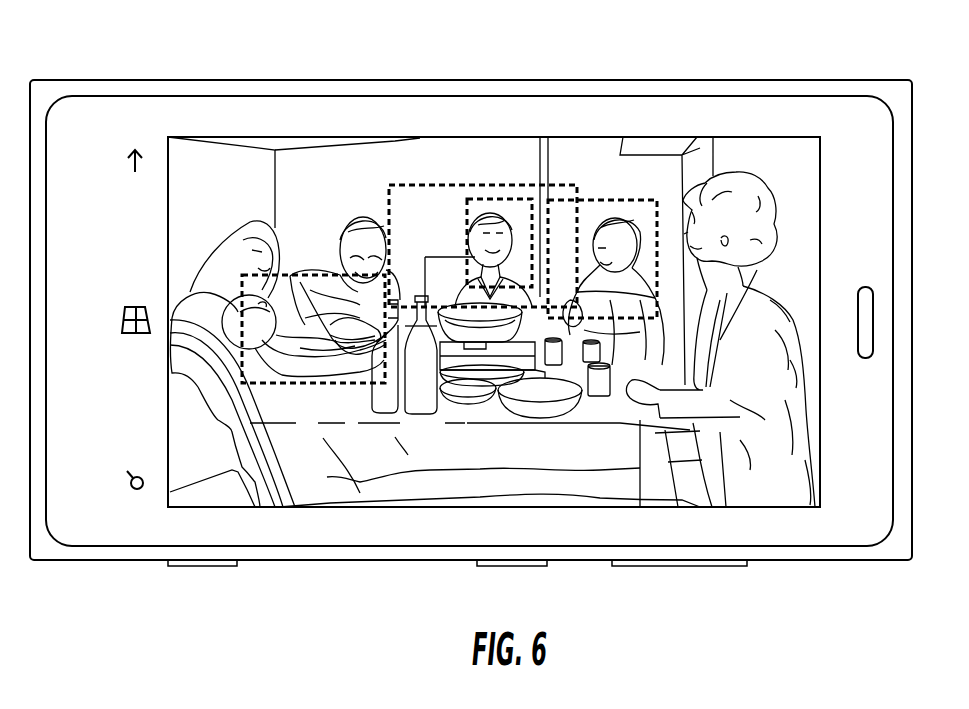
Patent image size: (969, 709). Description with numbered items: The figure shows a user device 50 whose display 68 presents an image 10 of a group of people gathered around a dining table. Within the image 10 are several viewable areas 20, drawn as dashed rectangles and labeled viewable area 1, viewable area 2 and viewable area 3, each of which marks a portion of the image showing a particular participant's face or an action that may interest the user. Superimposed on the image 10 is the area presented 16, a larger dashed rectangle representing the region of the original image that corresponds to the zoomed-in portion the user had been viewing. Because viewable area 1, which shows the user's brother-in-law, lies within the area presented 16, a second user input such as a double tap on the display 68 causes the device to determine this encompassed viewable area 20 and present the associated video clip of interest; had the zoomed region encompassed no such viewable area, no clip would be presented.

The user device 50 is at (845, 86).
The image 10 is at (608, 135).
The display 68 is at (173, 157).
The area presented 16 is at (428, 187).
The viewable area 20 is at (504, 200).
The viewable area "1" 1 is at (499, 221).
The viewable area "2" 2 is at (602, 236).
The viewable area "3" 3 is at (313, 306).